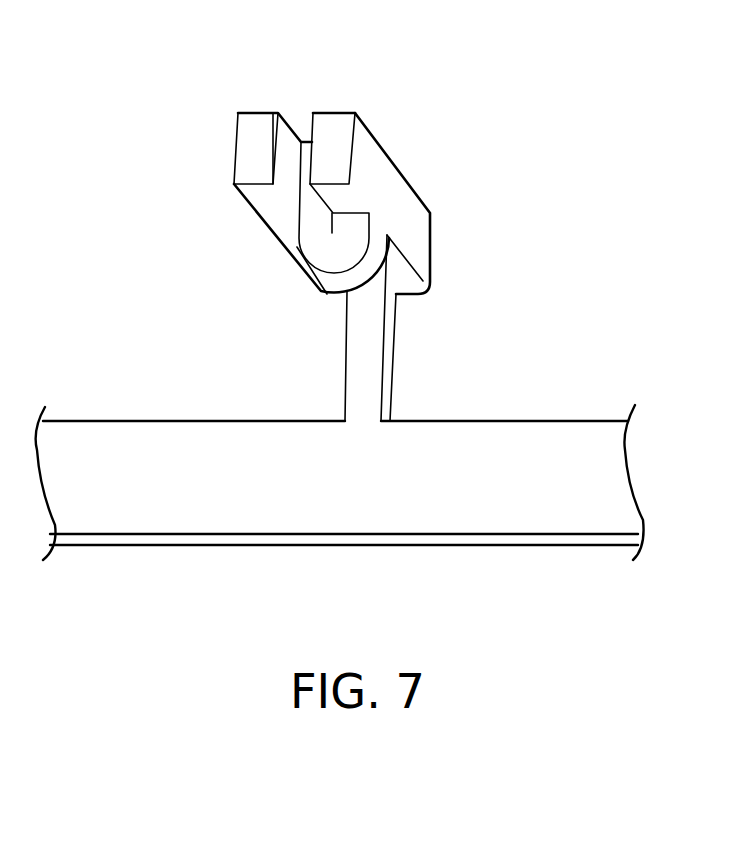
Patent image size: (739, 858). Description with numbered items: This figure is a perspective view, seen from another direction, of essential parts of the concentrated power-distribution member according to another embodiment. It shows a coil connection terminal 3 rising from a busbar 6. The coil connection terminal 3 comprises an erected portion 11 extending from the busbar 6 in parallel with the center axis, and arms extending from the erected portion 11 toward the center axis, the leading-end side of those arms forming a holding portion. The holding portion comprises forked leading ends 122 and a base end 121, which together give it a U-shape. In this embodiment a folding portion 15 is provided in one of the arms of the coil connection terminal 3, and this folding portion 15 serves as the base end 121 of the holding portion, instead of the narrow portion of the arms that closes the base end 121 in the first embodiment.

The coil connection terminal 3 is at (423, 148).
The busbar 6 is at (110, 420).
The erected portion 11 is at (388, 353).
The folding portion 15 is at (342, 287).
The base end 121 is at (312, 232).
The forked leading ends 122 is at (332, 138).